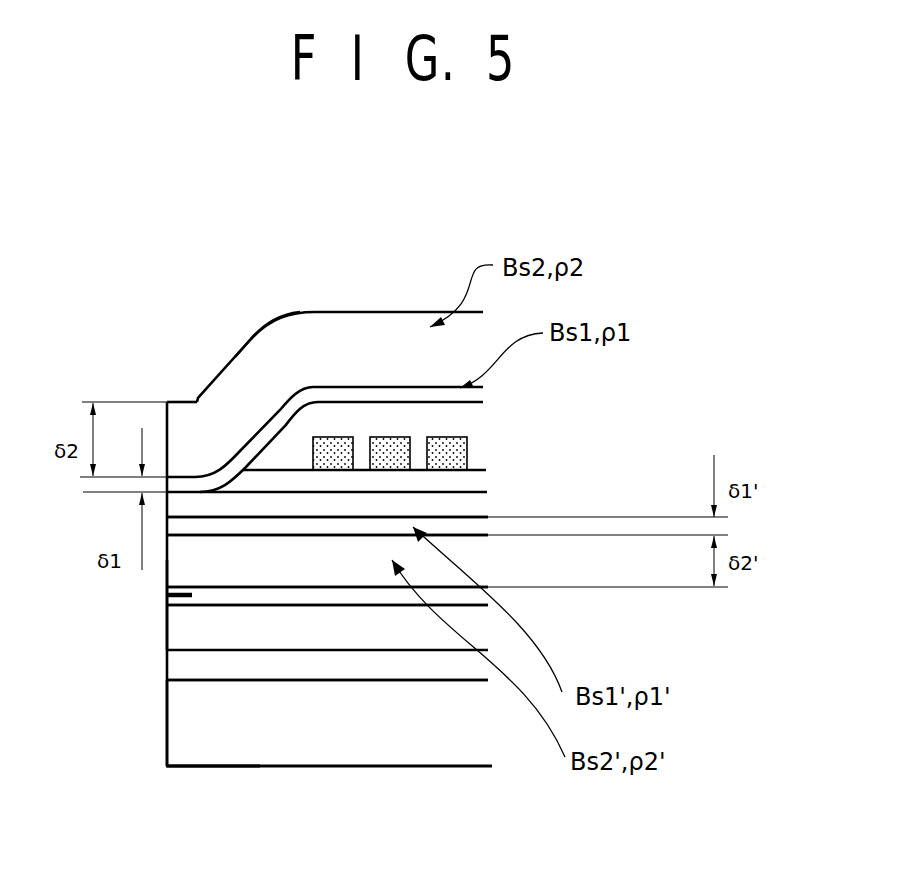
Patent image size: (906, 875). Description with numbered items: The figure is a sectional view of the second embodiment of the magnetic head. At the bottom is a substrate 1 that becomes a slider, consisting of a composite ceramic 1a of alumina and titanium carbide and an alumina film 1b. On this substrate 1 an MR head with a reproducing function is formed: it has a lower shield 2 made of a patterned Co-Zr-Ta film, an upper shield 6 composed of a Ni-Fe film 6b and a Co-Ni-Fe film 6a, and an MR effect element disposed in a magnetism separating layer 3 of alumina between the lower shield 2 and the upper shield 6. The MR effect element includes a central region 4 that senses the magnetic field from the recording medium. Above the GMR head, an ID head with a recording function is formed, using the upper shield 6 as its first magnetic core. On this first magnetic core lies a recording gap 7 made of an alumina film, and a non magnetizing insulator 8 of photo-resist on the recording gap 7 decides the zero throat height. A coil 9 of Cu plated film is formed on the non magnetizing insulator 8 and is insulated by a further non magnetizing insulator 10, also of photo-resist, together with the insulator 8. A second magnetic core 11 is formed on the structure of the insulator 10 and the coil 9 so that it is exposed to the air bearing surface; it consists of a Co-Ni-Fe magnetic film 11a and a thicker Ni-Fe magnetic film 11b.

The substrate 1 is at (167, 748).
The composite ceramic 1a is at (205, 738).
The alumina film 1b is at (283, 670).
The lower shield 2 is at (180, 630).
The magnetism separating layer 3 is at (267, 595).
The central region 4 is at (179, 598).
The upper shield 6 is at (173, 571).
The Co-Ni-Fe film 6a is at (292, 530).
The Ni-Fe film 6b is at (277, 568).
The recording gap 7 is at (328, 505).
The non magnetizing insulator 8 is at (477, 480).
The coil 9 is at (468, 450).
The non magnetizing insulator 10 is at (452, 418).
The second magnetic core 11 is at (342, 312).
The magnetic film 11a is at (265, 430).
The magnetic film 11b is at (262, 337).